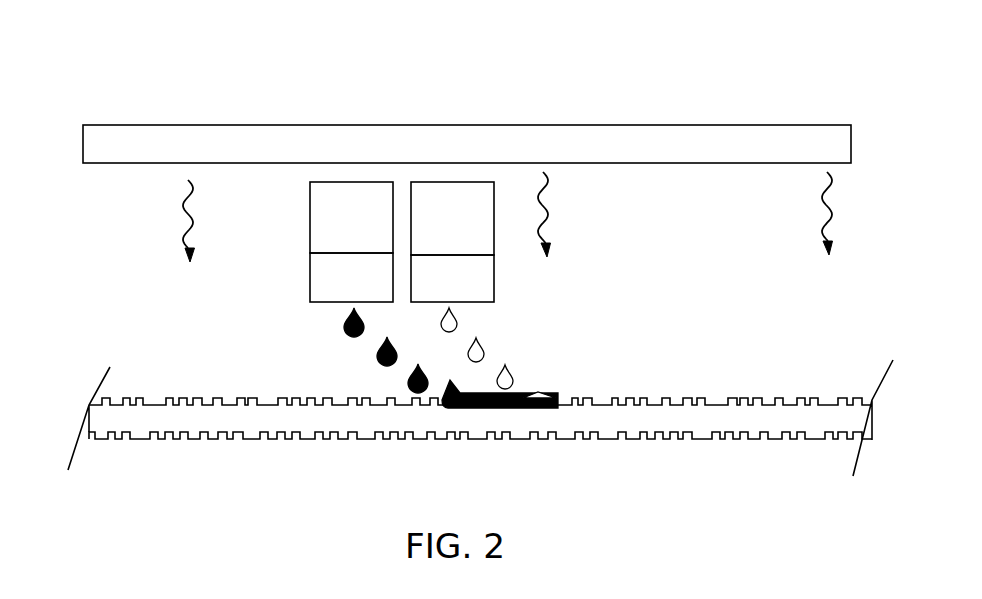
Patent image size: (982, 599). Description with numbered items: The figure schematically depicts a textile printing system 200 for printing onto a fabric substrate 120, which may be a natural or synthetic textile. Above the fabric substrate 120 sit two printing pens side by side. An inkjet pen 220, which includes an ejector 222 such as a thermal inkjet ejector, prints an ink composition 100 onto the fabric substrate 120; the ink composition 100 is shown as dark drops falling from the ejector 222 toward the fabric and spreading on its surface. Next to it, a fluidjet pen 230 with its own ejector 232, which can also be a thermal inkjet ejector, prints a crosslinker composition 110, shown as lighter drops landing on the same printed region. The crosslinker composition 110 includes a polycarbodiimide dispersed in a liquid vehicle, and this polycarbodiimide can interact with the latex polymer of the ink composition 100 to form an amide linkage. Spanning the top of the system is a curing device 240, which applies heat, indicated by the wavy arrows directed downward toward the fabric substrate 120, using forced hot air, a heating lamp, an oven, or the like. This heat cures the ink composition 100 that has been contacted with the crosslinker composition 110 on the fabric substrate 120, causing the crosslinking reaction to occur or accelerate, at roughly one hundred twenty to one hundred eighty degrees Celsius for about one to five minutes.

The textile printing system 200 is at (180, 78).
The curing device 240 is at (487, 156).
The inkjet pen 220 is at (372, 228).
The ejector 222 is at (372, 288).
The fluidjet pen 230 is at (473, 228).
The ejector 232 is at (473, 288).
The ink composition 100 is at (346, 321).
The crosslinker composition 110 is at (486, 353).
The fabric substrate 120 is at (660, 418).